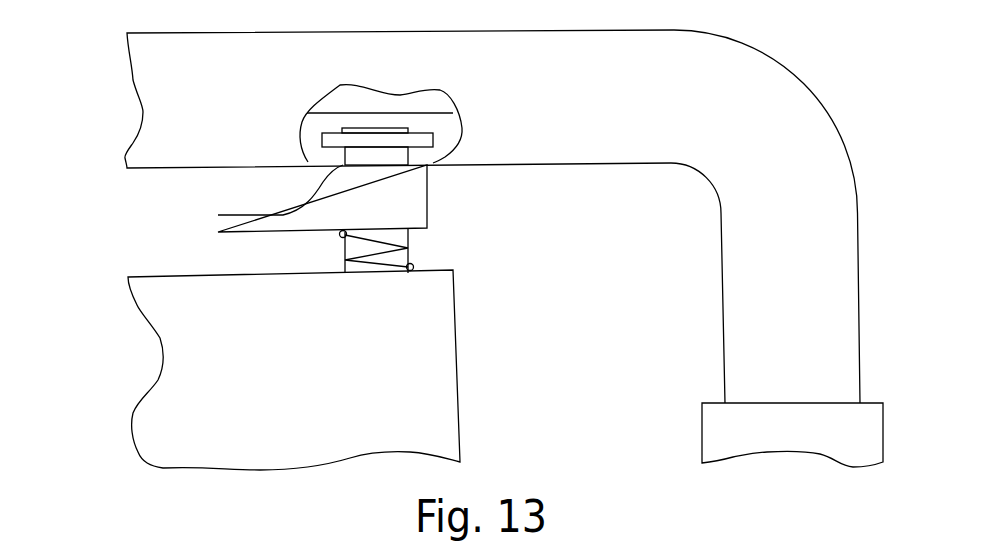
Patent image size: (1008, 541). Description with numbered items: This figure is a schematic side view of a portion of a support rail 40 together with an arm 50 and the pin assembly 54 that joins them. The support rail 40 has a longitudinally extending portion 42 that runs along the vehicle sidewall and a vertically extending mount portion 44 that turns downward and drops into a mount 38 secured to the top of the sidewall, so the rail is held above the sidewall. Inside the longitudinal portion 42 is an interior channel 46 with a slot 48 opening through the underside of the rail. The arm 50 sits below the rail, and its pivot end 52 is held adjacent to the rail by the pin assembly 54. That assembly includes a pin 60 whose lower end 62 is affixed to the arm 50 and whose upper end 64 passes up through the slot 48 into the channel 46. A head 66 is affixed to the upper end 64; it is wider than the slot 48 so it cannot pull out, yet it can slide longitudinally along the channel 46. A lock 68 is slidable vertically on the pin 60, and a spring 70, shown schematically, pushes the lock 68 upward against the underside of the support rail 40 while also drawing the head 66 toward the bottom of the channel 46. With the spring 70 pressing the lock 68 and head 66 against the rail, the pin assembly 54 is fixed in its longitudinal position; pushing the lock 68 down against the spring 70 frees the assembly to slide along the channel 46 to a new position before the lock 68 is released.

The mount 38 is at (702, 438).
The support rail 40 is at (130, 85).
The longitudinally extending portion 42 is at (165, 33).
The vertically extending mount portion 44 is at (860, 283).
The interior channel 46 is at (422, 110).
The slot 48 is at (440, 163).
The arm 50 is at (137, 311).
The pivot end 52 is at (457, 388).
The pin assembly 54 is at (117, 247).
The pin 60 is at (410, 247).
The lower end 62 is at (380, 273).
The upper end 64 is at (344, 163).
The head 66 is at (332, 133).
The lock 68 is at (278, 232).
The spring 70 is at (413, 256).